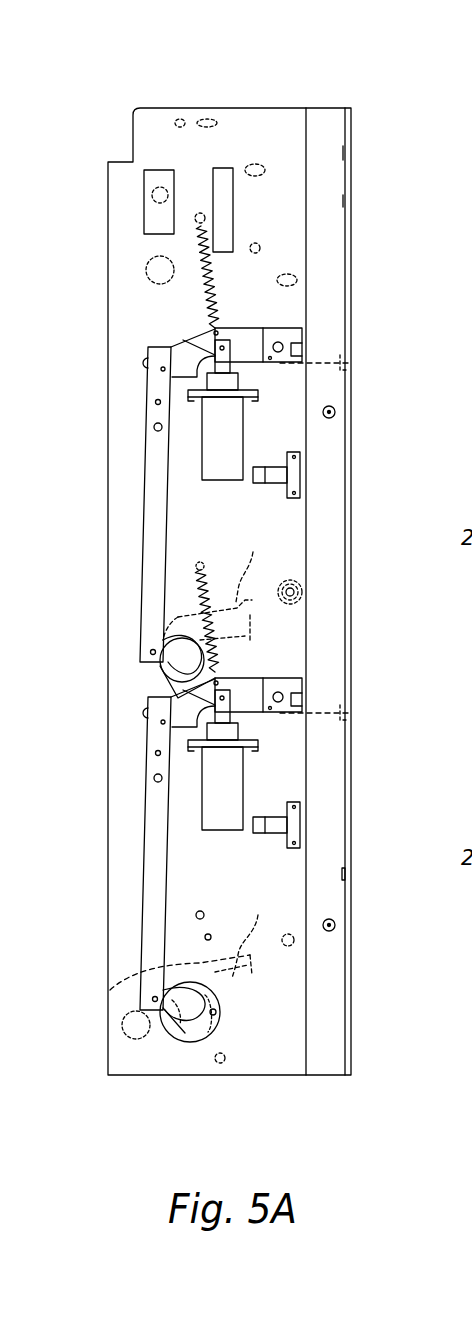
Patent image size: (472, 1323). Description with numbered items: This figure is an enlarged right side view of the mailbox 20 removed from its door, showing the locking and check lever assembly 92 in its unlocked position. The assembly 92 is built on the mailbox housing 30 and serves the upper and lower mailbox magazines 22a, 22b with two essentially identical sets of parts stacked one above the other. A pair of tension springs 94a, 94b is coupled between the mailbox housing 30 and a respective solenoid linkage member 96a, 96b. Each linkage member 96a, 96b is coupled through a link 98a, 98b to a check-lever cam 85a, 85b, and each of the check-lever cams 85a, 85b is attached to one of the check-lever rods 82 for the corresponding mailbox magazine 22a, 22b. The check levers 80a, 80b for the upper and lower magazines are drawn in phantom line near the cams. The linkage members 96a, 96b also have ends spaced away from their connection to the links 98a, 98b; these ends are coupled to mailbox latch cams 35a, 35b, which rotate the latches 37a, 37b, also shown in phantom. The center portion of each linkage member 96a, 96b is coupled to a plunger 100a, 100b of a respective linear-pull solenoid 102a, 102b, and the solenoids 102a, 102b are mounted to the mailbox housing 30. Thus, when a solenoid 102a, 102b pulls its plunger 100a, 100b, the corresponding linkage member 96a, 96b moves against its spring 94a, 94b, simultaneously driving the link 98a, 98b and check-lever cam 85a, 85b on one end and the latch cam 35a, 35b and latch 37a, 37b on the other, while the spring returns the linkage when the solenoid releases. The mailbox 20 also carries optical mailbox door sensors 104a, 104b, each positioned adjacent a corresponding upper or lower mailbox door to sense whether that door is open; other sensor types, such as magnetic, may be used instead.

The mailbox 20 is at (190, 96).
The mailbox housing 30 is at (123, 248).
The upper mailbox magazine 22a is at (94, 510).
The lower mailbox magazine 22b is at (79, 831).
The locking and check lever assembly 92 is at (94, 540).
The tension spring 94a is at (220, 300).
The tension spring 94b is at (215, 560).
The solenoid linkage member 96a is at (252, 328).
The solenoid linkage member 96b is at (252, 678).
The plunger 100a is at (220, 358).
The plunger 100b is at (225, 715).
The linear-pull solenoid 102a is at (235, 428).
The linear-pull solenoid 102b is at (220, 800).
The optical mailbox door sensor 104a is at (293, 473).
The optical mailbox door sensor 104b is at (293, 828).
The mailbox latch cam 35a is at (282, 352).
The mailbox latch cam 35b is at (282, 702).
The latch 37a is at (348, 363).
The latch 37b is at (348, 713).
The link 98a is at (155, 497).
The link 98b is at (158, 871).
The check-lever cam 85a is at (165, 684).
The check-lever cam 85b is at (187, 1017).
The check lever 80a is at (216, 585).
The check lever 80b is at (246, 931).
The check-lever rod 82 is at (110, 990).